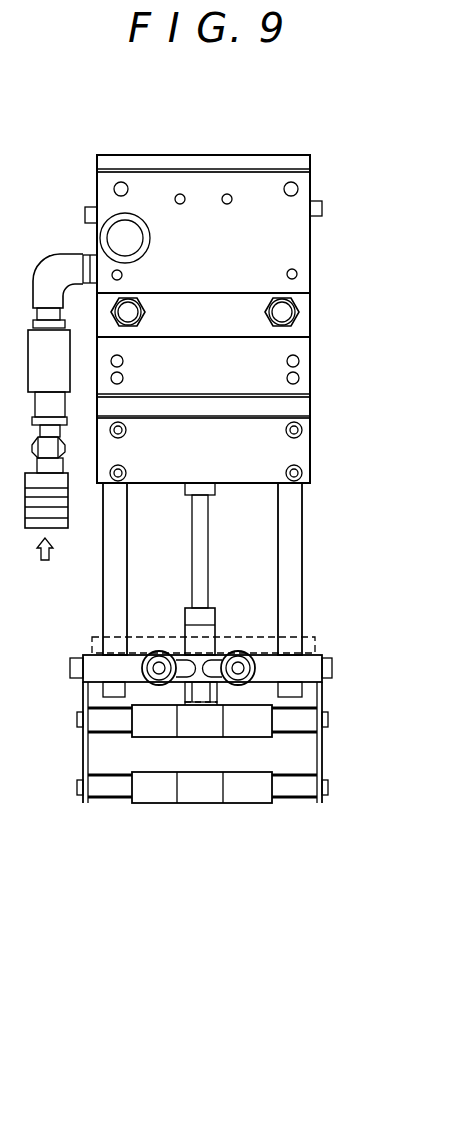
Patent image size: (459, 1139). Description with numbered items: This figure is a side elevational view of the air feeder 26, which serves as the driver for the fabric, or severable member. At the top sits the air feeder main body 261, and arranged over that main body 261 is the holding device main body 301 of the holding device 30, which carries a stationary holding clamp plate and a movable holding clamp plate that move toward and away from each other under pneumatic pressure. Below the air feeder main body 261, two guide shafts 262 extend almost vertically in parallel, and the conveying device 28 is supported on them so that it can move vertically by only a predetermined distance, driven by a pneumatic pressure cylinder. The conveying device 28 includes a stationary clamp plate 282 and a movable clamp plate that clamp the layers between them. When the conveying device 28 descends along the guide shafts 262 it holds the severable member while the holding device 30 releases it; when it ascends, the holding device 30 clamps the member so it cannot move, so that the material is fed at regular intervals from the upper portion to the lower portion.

The air feeder 26 is at (310, 133).
The air feeder main body 261 is at (293, 243).
The holding device 30 is at (290, 290).
The holding device main body 301 is at (302, 320).
The conveying device 28 is at (310, 423).
The stationary clamp plate 282 is at (292, 450).
The guide shaft 262 is at (292, 558).